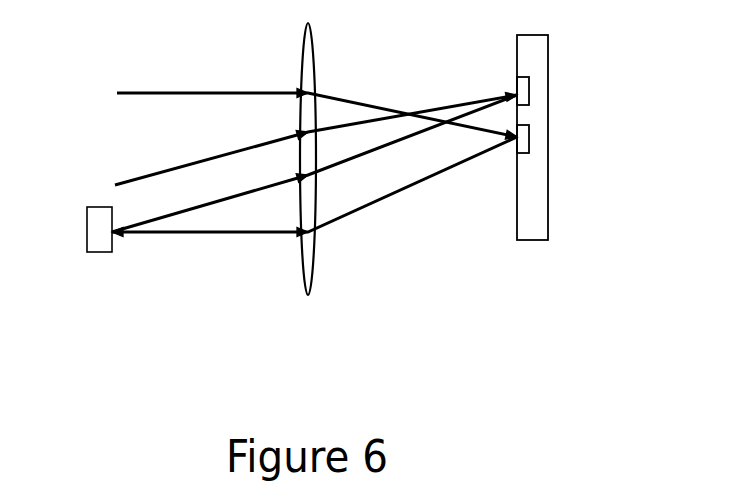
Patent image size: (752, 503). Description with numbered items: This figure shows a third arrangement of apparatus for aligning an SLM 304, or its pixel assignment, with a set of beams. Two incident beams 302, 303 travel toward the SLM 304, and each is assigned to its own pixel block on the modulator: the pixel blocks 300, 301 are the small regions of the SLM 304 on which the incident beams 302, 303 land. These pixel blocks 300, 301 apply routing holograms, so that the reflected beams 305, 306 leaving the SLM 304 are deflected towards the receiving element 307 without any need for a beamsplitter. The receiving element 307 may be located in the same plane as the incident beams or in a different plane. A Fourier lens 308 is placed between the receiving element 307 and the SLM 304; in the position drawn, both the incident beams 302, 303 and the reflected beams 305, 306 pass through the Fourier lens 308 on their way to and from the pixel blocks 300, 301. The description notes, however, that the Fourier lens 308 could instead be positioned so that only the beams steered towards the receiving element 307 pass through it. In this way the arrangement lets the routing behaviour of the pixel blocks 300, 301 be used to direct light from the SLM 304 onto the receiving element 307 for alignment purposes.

The pixel block 300 is at (532, 143).
The pixel block 301 is at (532, 93).
The incident beam 302 is at (207, 88).
The incident beam 303 is at (215, 155).
The SLM 304 is at (525, 230).
The reflected beam 305 is at (392, 153).
The reflected beam 306 is at (357, 208).
The receiving element 307 is at (97, 228).
The Fourier lens 308 is at (315, 82).